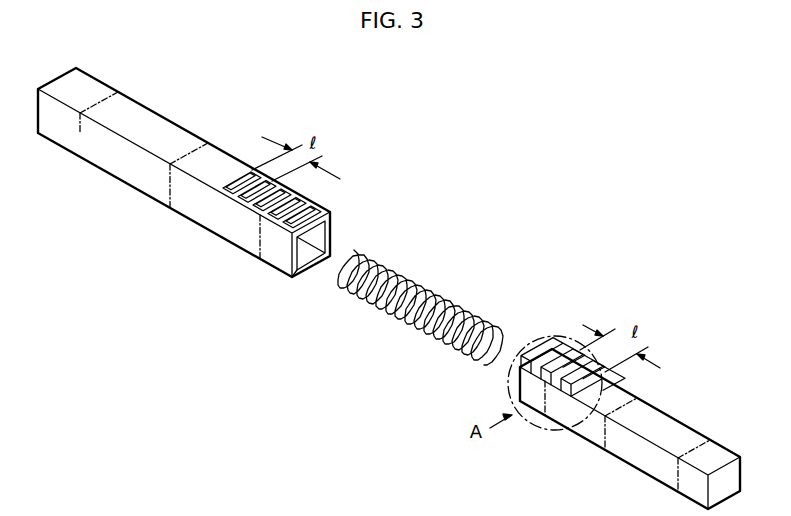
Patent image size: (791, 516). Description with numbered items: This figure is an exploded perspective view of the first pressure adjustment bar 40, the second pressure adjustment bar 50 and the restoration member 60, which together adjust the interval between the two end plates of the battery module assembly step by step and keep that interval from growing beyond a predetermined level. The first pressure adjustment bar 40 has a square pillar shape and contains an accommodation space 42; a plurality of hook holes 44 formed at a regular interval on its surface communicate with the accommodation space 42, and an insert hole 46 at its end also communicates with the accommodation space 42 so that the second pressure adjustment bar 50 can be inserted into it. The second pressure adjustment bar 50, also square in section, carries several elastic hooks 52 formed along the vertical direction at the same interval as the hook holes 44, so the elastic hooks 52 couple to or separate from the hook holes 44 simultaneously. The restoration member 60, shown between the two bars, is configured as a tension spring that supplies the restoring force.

The first pressure adjustment bar 40 is at (102, 160).
The accommodation space 42 is at (318, 238).
The hook holes 44 is at (220, 194).
The insert hole 46 is at (290, 266).
The second pressure adjustment bar 50 is at (638, 458).
The elastic hooks 52 is at (577, 387).
The restoration member 60 is at (415, 333).